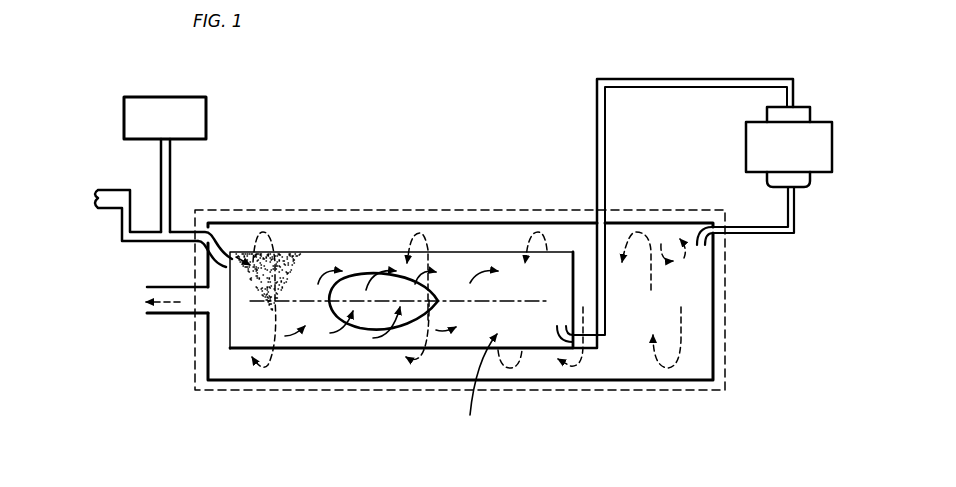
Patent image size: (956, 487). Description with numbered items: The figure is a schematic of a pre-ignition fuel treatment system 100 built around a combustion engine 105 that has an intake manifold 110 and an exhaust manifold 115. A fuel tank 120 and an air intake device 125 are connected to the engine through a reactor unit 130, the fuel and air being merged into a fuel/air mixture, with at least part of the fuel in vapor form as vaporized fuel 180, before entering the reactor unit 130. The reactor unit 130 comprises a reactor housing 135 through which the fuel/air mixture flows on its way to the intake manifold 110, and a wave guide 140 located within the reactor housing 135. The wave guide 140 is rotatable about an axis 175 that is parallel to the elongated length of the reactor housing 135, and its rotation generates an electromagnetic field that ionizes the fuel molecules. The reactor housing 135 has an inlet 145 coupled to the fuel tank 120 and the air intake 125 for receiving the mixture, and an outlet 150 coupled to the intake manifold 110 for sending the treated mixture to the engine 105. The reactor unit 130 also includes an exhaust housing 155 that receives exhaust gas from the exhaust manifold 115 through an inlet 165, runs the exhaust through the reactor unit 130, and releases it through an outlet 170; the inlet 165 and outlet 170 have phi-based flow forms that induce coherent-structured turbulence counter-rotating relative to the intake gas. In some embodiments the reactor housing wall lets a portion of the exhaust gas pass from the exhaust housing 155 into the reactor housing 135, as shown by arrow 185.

The pre-ignition fuel treatment system 100 is at (168, 74).
The combustion engine 105 is at (745, 132).
The intake manifold 110 is at (812, 113).
The exhaust manifold 115 is at (803, 190).
The fuel tank 120 is at (207, 106).
The air intake device 125 is at (107, 190).
The reactor unit 130 is at (312, 393).
The reactor housing 135 is at (485, 252).
The wave guide 140 is at (355, 284).
The inlet 145 is at (222, 253).
The outlet 150 is at (587, 345).
The exhaust housing 155 is at (530, 380).
The inlet 165 is at (697, 240).
The outlet 170 is at (173, 317).
The axis 175 is at (278, 300).
The vaporized fuel 180 is at (253, 280).
The arrow 185 is at (476, 387).